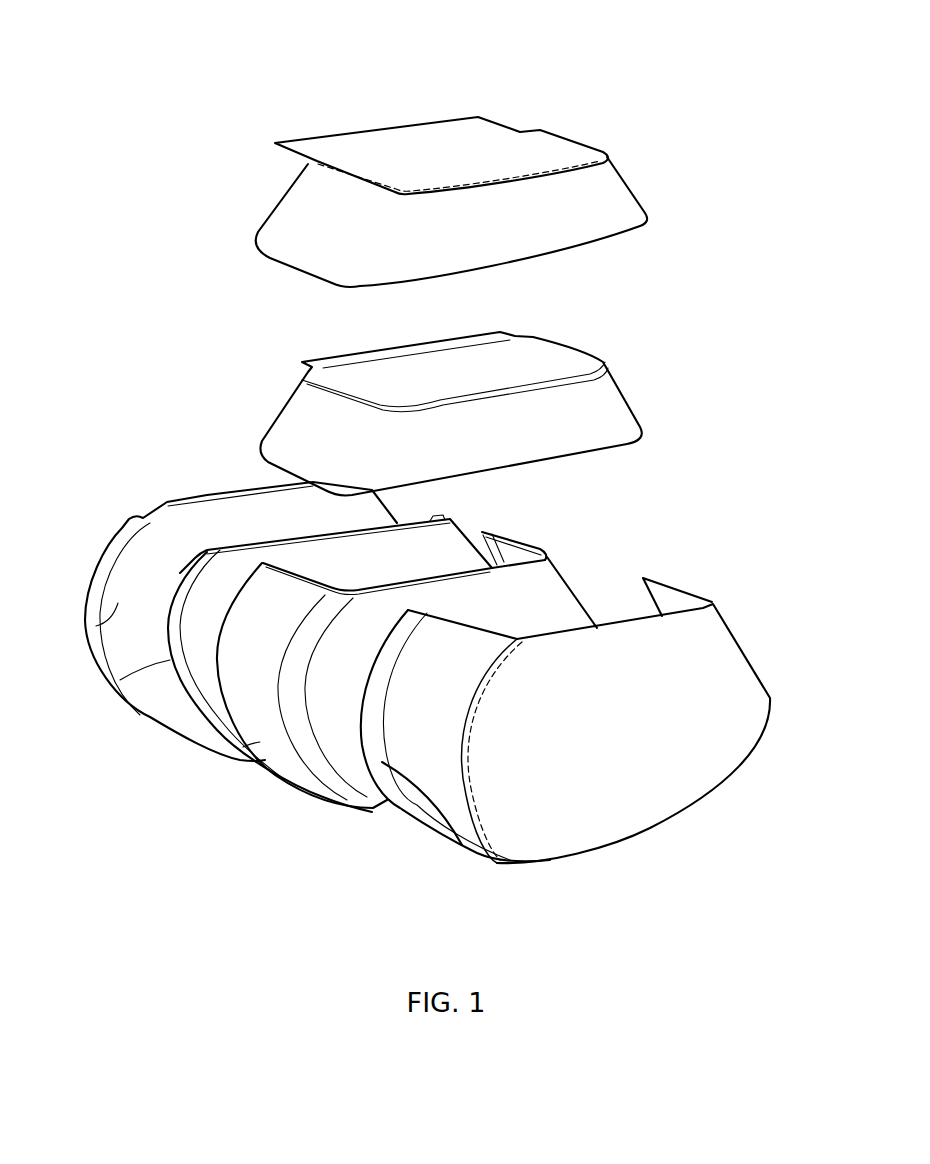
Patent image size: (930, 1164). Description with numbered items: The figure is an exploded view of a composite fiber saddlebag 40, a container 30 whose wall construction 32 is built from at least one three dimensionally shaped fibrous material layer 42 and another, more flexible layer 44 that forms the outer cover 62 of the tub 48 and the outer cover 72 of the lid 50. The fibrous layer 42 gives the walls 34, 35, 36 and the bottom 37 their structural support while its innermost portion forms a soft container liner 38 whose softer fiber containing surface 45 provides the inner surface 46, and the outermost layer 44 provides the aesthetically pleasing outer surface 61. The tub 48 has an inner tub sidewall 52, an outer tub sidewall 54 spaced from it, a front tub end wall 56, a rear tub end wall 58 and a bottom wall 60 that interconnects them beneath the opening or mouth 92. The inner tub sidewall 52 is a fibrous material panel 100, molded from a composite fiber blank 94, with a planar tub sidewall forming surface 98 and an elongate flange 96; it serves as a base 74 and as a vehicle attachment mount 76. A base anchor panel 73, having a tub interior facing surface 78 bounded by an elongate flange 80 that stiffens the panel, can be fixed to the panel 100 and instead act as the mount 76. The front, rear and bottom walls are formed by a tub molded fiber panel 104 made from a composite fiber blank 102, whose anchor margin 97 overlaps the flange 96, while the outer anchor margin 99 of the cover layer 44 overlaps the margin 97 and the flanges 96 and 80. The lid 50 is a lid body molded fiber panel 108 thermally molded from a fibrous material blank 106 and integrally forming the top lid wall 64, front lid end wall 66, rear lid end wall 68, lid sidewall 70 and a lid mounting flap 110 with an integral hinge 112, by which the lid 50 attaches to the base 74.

The container 30 is at (685, 833).
The wall construction 32 is at (757, 787).
The wall 34 is at (437, 797).
The wall 35 is at (683, 595).
The wall 36 is at (720, 688).
The bottom 37 is at (607, 848).
The composite fiber container liner 38 is at (215, 578).
The saddlebag 40 is at (147, 53).
The fibrous material layer 42 is at (600, 367).
The other layer 44 is at (622, 175).
The softer fiber containing surface 45 is at (307, 558).
The inner surface 46 is at (277, 560).
The tub 48 is at (258, 872).
The lid 50 is at (310, 137).
The inner tub sidewall 52 is at (215, 757).
The outer tub sidewall 54 is at (547, 597).
The front tub end wall 56 is at (283, 762).
The rear tub end wall 58 is at (520, 533).
The bottom wall 60 is at (393, 807).
The outer surface 61 is at (703, 648).
The outer cover 62 is at (692, 777).
The top lid wall 64 is at (427, 368).
The front lid end wall 66 is at (283, 428).
The rear lid end wall 68 is at (630, 392).
The lid sidewall 70 is at (577, 420).
The outer cover 72 is at (393, 152).
The base anchor panel 73 is at (80, 590).
The base 74 is at (180, 748).
The vehicle attachment mount 76 is at (85, 565).
The tub interior facing surface 78 is at (98, 627).
The flange 80 is at (100, 647).
The opening or mouth 92 is at (340, 553).
The composite fiber blank 94 is at (178, 586).
The flange 96 is at (122, 680).
The anchor margin 97 is at (229, 726).
The tub sidewall forming surface 98 is at (393, 550).
The outer anchor margin 99 is at (443, 763).
The fibrous material panel 100 is at (195, 706).
The composite fiber blank 102 is at (304, 788).
The tub molded fiber panel 104 is at (373, 807).
The fibrous material blank 106 is at (282, 395).
The lid body molded fiber panel 108 is at (558, 352).
The lid mounting flap 110 is at (308, 358).
The integral hinge 112 is at (357, 363).